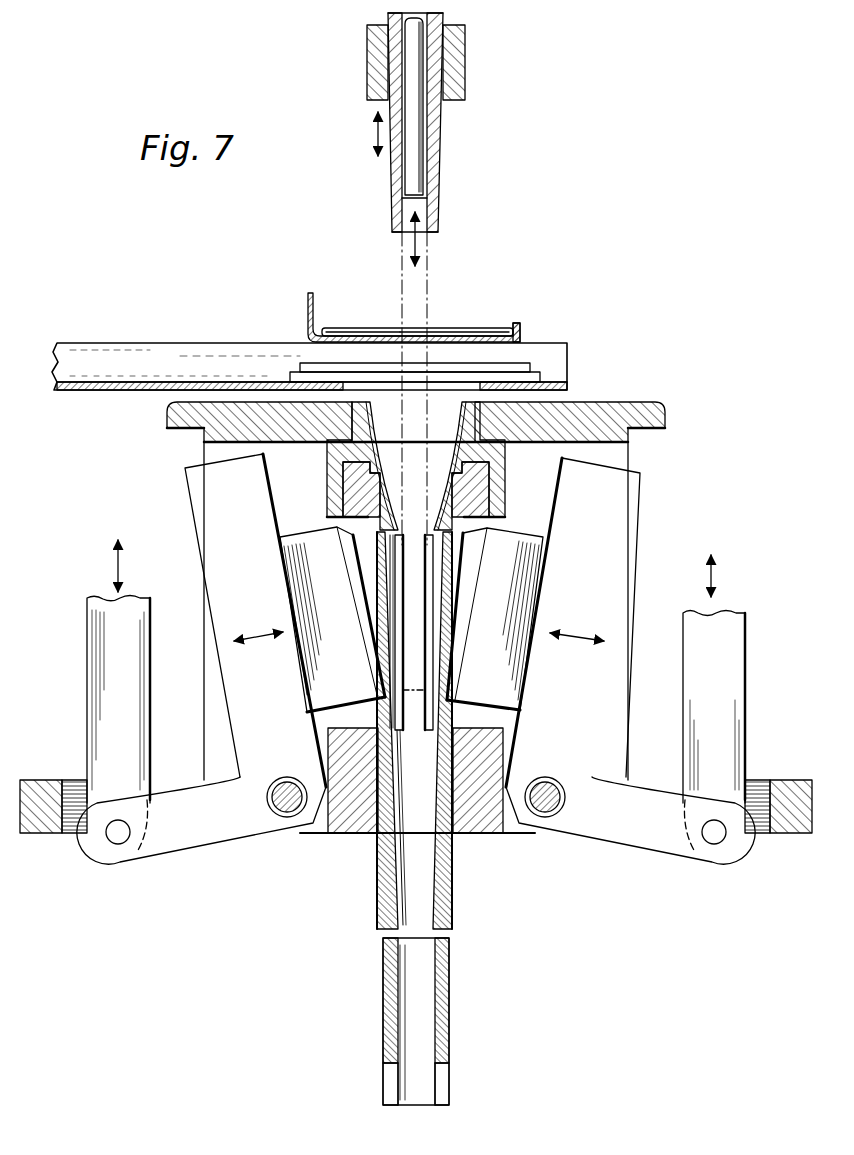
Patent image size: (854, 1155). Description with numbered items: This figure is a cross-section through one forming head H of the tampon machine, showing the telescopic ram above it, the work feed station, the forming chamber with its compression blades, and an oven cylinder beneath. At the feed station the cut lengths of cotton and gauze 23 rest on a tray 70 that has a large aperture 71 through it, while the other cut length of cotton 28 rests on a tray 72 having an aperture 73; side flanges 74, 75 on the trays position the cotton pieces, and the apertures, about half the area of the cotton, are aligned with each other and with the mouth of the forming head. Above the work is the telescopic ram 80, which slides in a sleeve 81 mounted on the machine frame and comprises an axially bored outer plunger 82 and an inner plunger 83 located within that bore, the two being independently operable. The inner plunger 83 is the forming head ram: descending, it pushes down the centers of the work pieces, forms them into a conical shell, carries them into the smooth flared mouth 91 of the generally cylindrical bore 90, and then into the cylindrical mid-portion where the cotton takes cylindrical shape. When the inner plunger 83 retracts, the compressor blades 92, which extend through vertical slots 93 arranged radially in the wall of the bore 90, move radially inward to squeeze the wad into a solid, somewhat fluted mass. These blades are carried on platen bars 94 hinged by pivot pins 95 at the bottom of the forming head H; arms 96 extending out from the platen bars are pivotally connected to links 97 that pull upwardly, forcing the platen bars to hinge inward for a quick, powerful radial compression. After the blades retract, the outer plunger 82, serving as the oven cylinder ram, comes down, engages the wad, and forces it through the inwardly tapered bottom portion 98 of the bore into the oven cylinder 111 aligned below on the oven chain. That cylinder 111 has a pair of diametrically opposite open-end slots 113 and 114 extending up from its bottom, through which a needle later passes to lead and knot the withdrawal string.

The telescopic ram 80 is at (397, 122).
The sleeve 81 is at (367, 82).
The outer plunger 82 is at (441, 145).
The inner plunger 83 is at (413, 165).
The side flange 75 is at (424, 302).
The side flange 74 is at (522, 324).
The cut length of cotton 28 is at (492, 330).
The tray 72 is at (322, 334).
The aperture 73 is at (461, 335).
The tray 70 is at (183, 380).
The cut lengths of cotton and gauze 23 is at (285, 372).
The aperture 71 is at (447, 387).
The forming head H is at (199, 448).
The cylindrical bore 90 is at (436, 510).
The flared mouth 91 is at (445, 456).
The inwardly tapered bottom portion 98 is at (440, 903).
The vertical slots 93 is at (436, 716).
The compressor blades 92 is at (330, 543).
The platen bars 94 is at (205, 500).
The arms 96 is at (210, 833).
The pivot pins 95 is at (290, 813).
The links 97 is at (105, 668).
The oven cylinder 111 is at (405, 1027).
The open-end slot 113 is at (443, 1090).
The open-end slot 114 is at (393, 1090).